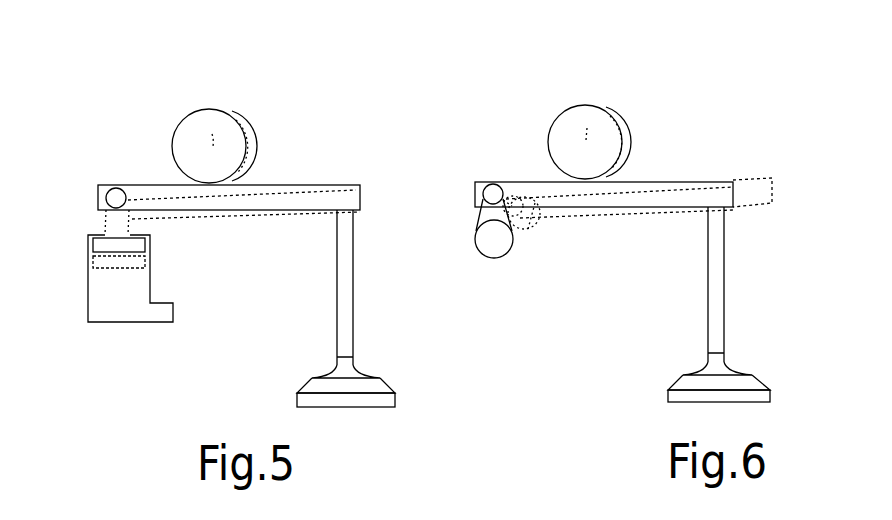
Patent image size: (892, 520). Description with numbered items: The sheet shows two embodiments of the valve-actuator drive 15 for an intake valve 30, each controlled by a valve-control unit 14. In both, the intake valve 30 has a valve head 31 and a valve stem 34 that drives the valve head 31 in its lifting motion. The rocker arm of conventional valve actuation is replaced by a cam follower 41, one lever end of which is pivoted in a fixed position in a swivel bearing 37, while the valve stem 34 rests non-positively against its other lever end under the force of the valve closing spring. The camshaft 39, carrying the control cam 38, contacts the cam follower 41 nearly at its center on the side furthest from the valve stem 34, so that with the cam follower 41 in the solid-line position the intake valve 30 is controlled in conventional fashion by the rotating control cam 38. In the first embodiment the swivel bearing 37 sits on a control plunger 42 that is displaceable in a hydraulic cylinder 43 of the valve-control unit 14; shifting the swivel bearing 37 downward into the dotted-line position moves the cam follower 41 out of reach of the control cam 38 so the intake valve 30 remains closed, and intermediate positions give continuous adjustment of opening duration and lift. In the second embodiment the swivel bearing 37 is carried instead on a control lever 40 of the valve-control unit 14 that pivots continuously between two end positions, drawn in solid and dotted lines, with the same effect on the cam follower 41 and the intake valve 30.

In FIG. 5, the valve-control unit 14 is at (87, 262).
In FIG. 6, the valve-control unit 14 is at (469, 248).
In FIG. 5, the valve-actuator drive 15 is at (352, 178).
In FIG. 6, the valve-actuator drive 15 is at (725, 177).
In FIG. 5, the intake valve 30 is at (282, 388).
In FIG. 6, the intake valve 30 is at (663, 397).
In FIG. 5, the valve head 31 is at (377, 392).
In FIG. 6, the valve head 31 is at (745, 385).
In FIG. 5, the valve stem 34 is at (345, 333).
In FIG. 6, the valve stem 34 is at (715, 343).
In FIG. 5, the swivel bearing 37 is at (109, 187).
In FIG. 6, the swivel bearing 37 is at (492, 185).
In FIG. 5, the control cam 38 is at (260, 139).
In FIG. 6, the control cam 38 is at (628, 140).
In FIG. 5, the camshaft 39 is at (208, 142).
In FIG. 6, the camshaft 39 is at (585, 130).
In FIG. 6, the control lever 40 is at (485, 213).
In FIG. 5, the cam follower 41 is at (273, 198).
In FIG. 6, the cam follower 41 is at (658, 198).
In FIG. 5, the control plunger 42 is at (103, 245).
In FIG. 5, the hydraulic cylinder 43 is at (87, 307).